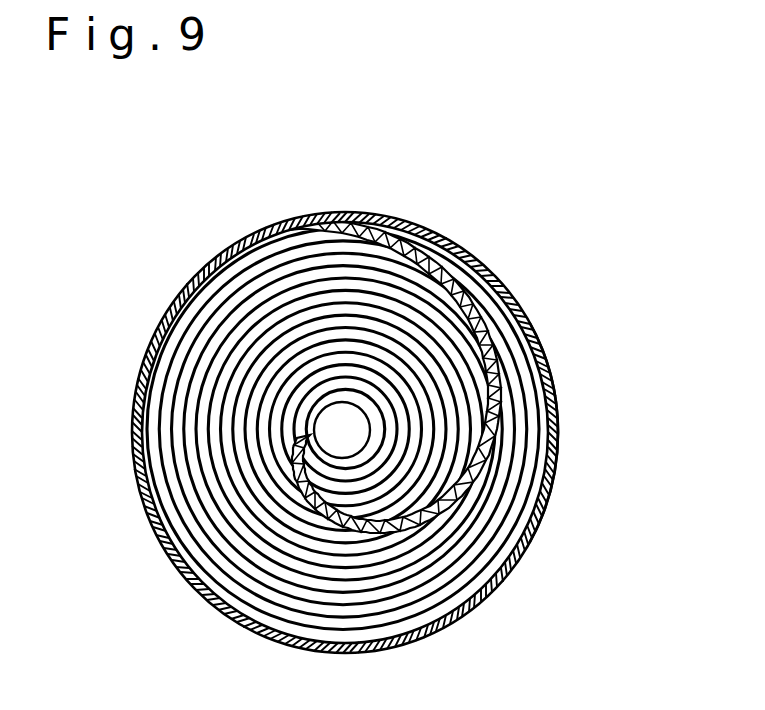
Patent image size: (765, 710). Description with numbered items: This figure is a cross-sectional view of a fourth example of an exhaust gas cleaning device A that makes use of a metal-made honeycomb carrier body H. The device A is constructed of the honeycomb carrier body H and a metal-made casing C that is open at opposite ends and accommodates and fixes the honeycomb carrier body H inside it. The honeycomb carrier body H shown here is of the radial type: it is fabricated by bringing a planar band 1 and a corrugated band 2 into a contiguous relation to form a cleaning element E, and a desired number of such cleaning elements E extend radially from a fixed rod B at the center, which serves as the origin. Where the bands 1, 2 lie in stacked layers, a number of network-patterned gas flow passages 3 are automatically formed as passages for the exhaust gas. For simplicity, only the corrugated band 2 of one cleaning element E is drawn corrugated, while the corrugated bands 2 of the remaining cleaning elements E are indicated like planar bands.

The planar band 1 is at (340, 211).
The corrugated band 2 is at (300, 212).
The gas flow passages 3 is at (283, 219).
The exhaust gas cleaning device A is at (374, 395).
The fixed rod B is at (337, 430).
The casing C is at (553, 485).
The cleaning element E is at (395, 247).
The honeycomb carrier body H is at (520, 420).